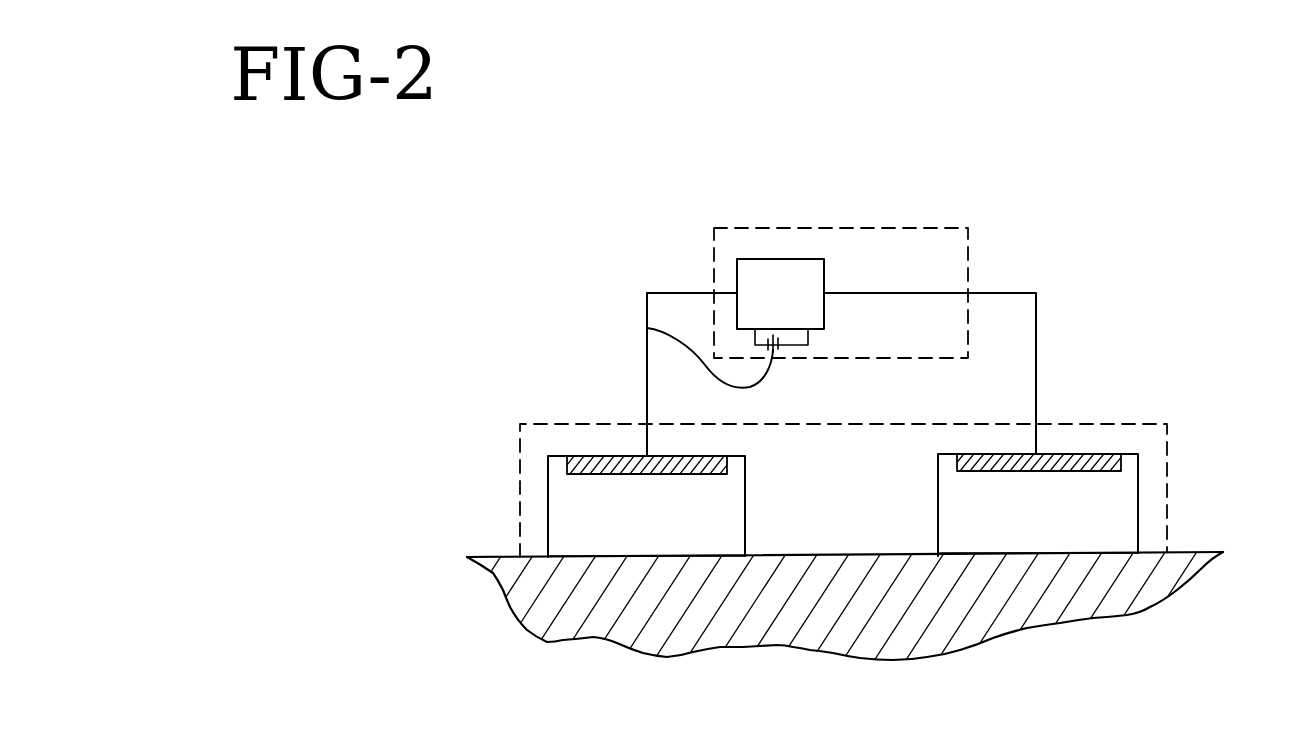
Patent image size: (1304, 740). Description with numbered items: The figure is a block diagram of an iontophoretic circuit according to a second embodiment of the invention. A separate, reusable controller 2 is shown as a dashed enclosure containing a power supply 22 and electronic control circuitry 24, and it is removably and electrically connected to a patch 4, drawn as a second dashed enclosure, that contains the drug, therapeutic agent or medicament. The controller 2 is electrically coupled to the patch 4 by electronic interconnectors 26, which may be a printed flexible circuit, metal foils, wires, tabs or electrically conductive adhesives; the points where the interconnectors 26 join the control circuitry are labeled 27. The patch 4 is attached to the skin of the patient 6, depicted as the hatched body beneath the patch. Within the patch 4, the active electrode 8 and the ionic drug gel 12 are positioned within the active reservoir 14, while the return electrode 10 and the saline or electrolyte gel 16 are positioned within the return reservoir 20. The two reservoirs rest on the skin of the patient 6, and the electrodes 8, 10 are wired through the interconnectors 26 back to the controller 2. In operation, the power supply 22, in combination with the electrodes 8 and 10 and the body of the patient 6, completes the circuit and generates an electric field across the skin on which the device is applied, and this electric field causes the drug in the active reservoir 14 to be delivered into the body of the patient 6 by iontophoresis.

The controller 2 is at (848, 227).
The patch 4 is at (1072, 420).
The patient 6 is at (1120, 618).
The active electrode 8 is at (1112, 452).
The return electrode 10 is at (573, 456).
The ionic drug gel 12 is at (1123, 538).
The active reservoir 14 is at (1138, 515).
The saline or electrolyte gel 16 is at (562, 544).
The return reservoir 20 is at (548, 521).
The power supply 22 is at (647, 328).
The electronic control circuitry 24 is at (783, 258).
The electronic interconnectors 26 is at (677, 295).
The lead connection 27 is at (724, 294).